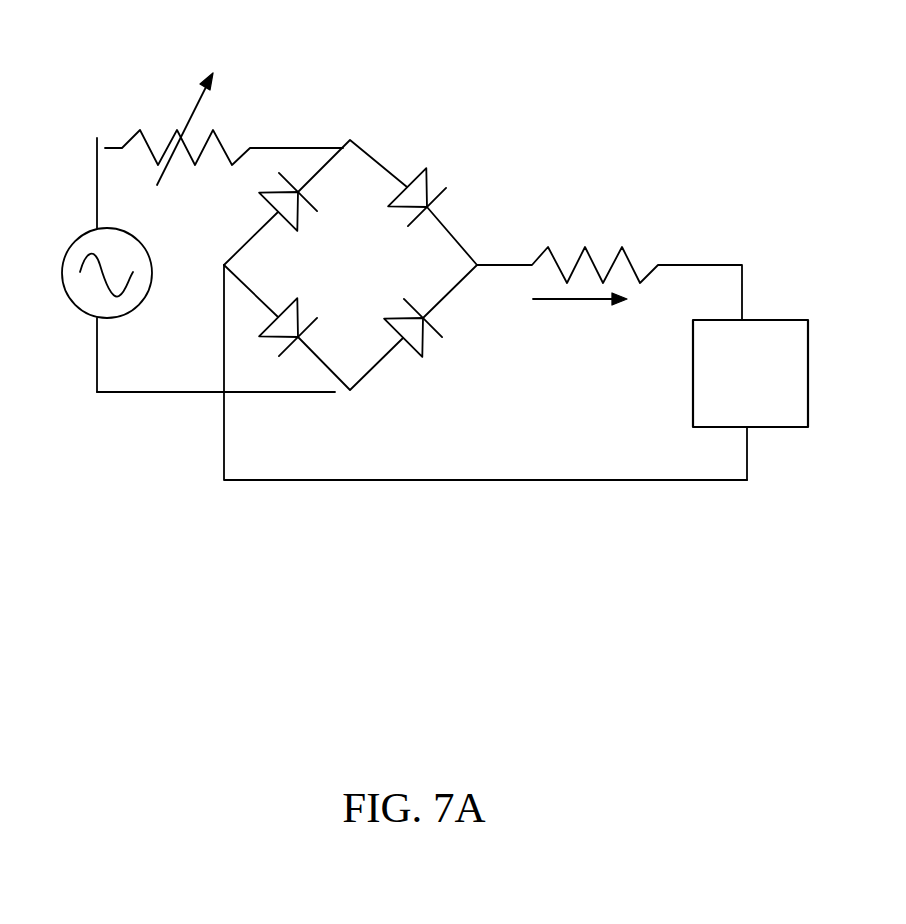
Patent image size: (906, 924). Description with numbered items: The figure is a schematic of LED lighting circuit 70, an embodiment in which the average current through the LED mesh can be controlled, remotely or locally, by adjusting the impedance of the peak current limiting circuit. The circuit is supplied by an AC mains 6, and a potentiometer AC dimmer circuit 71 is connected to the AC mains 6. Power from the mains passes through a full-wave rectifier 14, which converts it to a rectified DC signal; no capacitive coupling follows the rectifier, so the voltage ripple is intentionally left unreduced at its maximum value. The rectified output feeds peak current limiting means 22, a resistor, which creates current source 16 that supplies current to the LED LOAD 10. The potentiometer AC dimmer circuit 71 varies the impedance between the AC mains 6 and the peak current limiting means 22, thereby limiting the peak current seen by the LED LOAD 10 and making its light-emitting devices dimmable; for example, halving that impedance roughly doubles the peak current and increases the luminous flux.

The AC mains 6 is at (78, 310).
The potentiometer AC dimmer circuit 71 is at (224, 99).
The full-wave rectifier 14 is at (378, 163).
The peak current limiting means 22 is at (632, 255).
The current source 16 is at (588, 300).
The LED LOAD 10 is at (792, 428).
The LED lighting circuit 70 is at (331, 501).